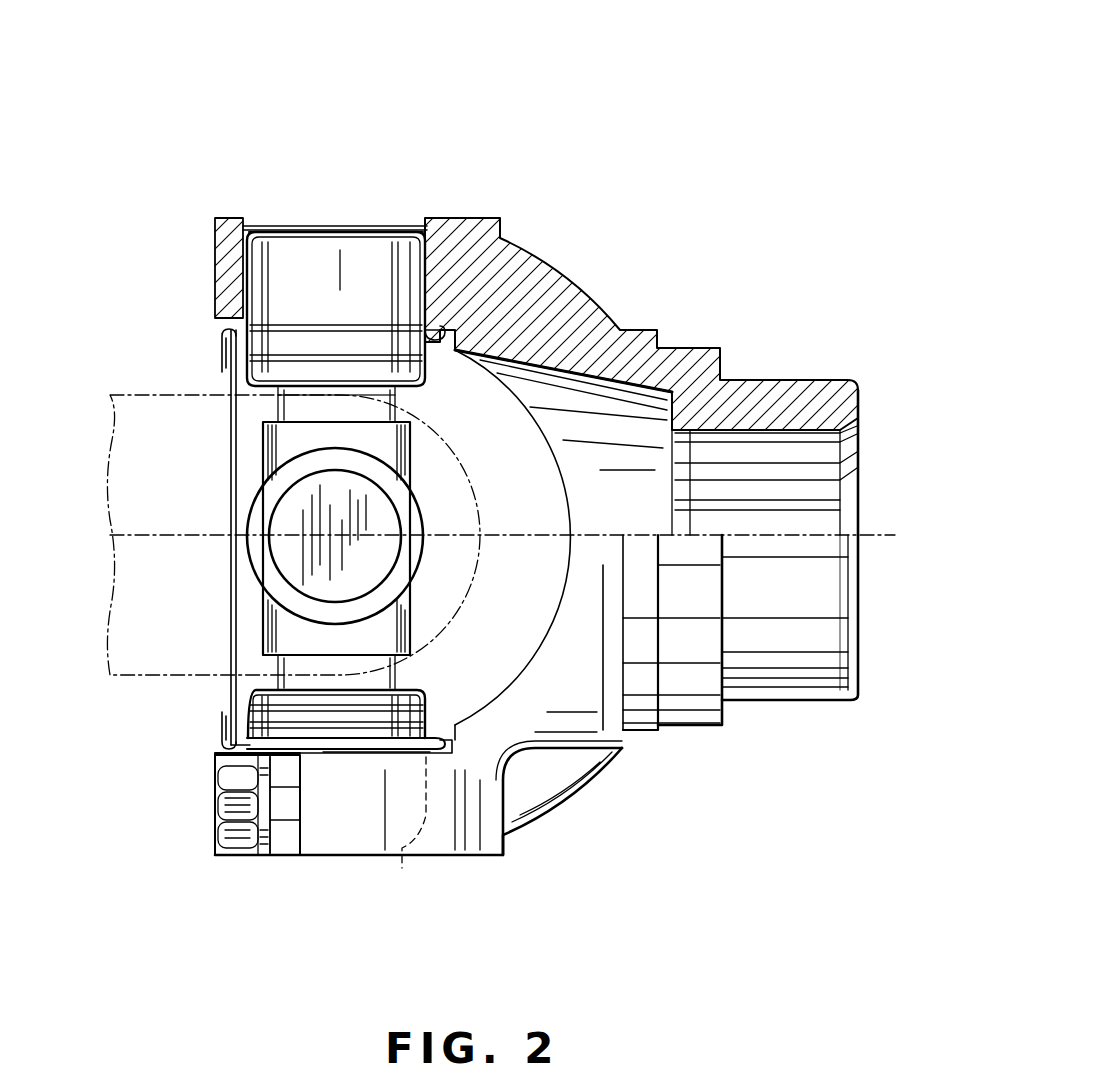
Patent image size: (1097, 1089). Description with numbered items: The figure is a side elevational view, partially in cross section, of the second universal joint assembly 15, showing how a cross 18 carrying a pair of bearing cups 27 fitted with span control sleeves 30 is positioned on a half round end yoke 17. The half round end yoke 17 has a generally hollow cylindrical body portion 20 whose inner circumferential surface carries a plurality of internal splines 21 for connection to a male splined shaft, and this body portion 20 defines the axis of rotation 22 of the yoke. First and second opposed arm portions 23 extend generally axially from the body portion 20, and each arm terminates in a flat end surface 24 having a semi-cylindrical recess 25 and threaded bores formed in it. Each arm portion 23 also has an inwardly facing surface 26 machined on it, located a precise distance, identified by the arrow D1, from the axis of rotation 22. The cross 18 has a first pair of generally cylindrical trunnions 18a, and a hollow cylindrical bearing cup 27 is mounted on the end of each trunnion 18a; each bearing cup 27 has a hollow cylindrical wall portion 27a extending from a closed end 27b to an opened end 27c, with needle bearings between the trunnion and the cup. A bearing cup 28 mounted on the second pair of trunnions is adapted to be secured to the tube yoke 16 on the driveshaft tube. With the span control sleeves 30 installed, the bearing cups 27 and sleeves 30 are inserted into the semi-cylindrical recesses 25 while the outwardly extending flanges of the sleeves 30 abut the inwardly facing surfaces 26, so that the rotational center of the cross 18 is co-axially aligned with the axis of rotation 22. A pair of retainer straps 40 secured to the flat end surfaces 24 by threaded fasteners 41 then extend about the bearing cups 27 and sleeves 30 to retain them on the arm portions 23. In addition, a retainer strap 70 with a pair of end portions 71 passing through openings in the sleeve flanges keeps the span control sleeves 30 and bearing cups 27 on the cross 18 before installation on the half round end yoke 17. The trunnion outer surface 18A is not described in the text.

The universal joint assembly 15 is at (640, 104).
The tube yoke 16 is at (162, 404).
The half round end yoke 17 is at (565, 302).
The cross 18 is at (400, 458).
The trunnion outer surface 18A is at (378, 404).
The first pair of trunnions 18a is at (268, 662).
The hollow cylindrical body portion 20 is at (782, 385).
The internal splines 21 is at (800, 462).
The axis of rotation 22 is at (800, 530).
The opposed arm portions 23 is at (480, 222).
The flat end surface 24 is at (290, 848).
The semi-cylindrical recess 25 is at (422, 272).
The inwardly facing surface 26 is at (440, 348).
The bearing cup 27 is at (337, 220).
The hollow cylindrical wall portion 27a is at (265, 272).
The closed end 27b is at (290, 240).
The opened end 27c is at (262, 392).
The bearing cup 28 is at (290, 552).
The span control sleeve 30 is at (250, 220).
The retainer strap 40 is at (218, 232).
The threaded fastener 41 is at (236, 800).
The retainer strap 70 is at (236, 497).
The end portions 71 is at (226, 348).
The precise distance D1 is at (368, 742).